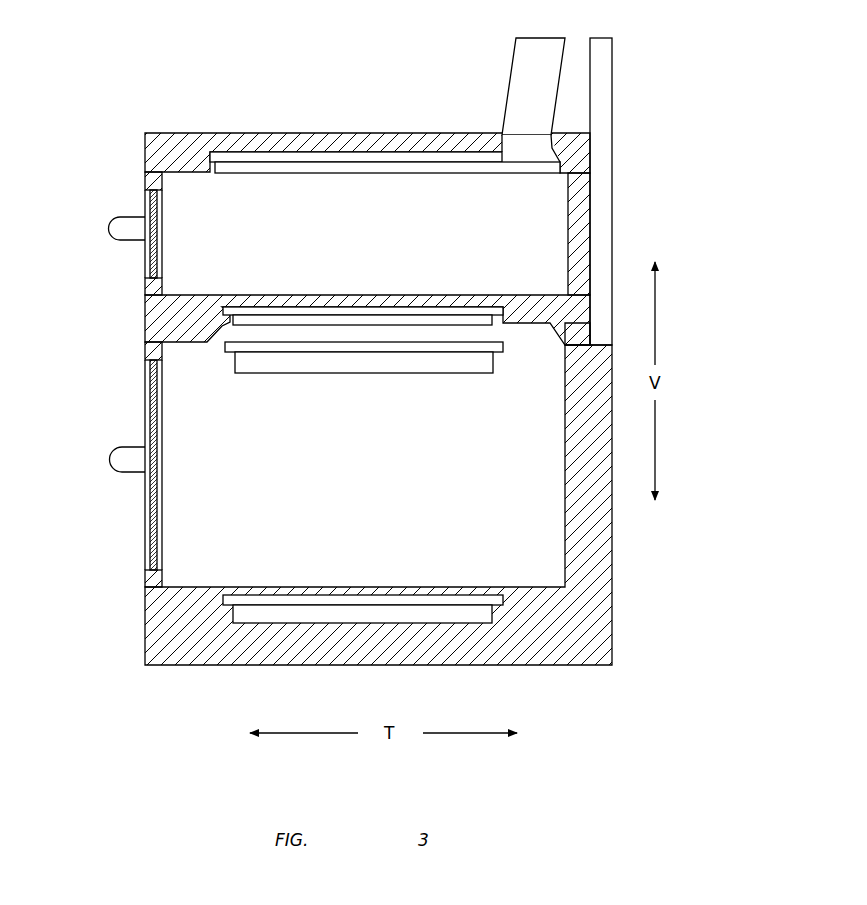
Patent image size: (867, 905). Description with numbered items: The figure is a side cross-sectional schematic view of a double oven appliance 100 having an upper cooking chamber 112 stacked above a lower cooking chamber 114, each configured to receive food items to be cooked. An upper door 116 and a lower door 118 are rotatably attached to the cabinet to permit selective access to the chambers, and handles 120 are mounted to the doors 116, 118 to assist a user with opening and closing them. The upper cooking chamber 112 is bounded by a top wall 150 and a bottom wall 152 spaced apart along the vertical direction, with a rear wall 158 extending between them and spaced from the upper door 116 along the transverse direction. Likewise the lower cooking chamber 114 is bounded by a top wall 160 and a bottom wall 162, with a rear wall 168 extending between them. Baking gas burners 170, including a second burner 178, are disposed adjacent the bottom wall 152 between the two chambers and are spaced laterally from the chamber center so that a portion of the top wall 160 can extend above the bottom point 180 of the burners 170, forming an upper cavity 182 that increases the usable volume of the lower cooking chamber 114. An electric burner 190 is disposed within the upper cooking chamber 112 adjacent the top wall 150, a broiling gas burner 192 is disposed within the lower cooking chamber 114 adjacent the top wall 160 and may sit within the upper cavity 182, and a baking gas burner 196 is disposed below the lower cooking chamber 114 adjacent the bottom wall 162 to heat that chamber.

The double oven appliance 100 is at (222, 70).
The upper cooking chamber 112 is at (380, 232).
The lower cooking chamber 114 is at (390, 480).
The upper door 116 is at (143, 262).
The lower door 118 is at (143, 490).
The handle 120 is at (115, 228).
The top wall 150 is at (284, 150).
The bottom wall 152 is at (435, 292).
The rear wall 158 is at (568, 195).
The top wall 160 is at (517, 330).
The bottom wall 162 is at (405, 585).
The rear wall 168 is at (566, 430).
The baking gas burner 170 is at (220, 312).
The second burner 178 is at (270, 313).
The bottom point 180 is at (420, 335).
The upper cavity 182 is at (328, 337).
The electric burner 190 is at (412, 179).
The broiling gas burner 192 is at (355, 375).
The baking gas burner 196 is at (440, 625).